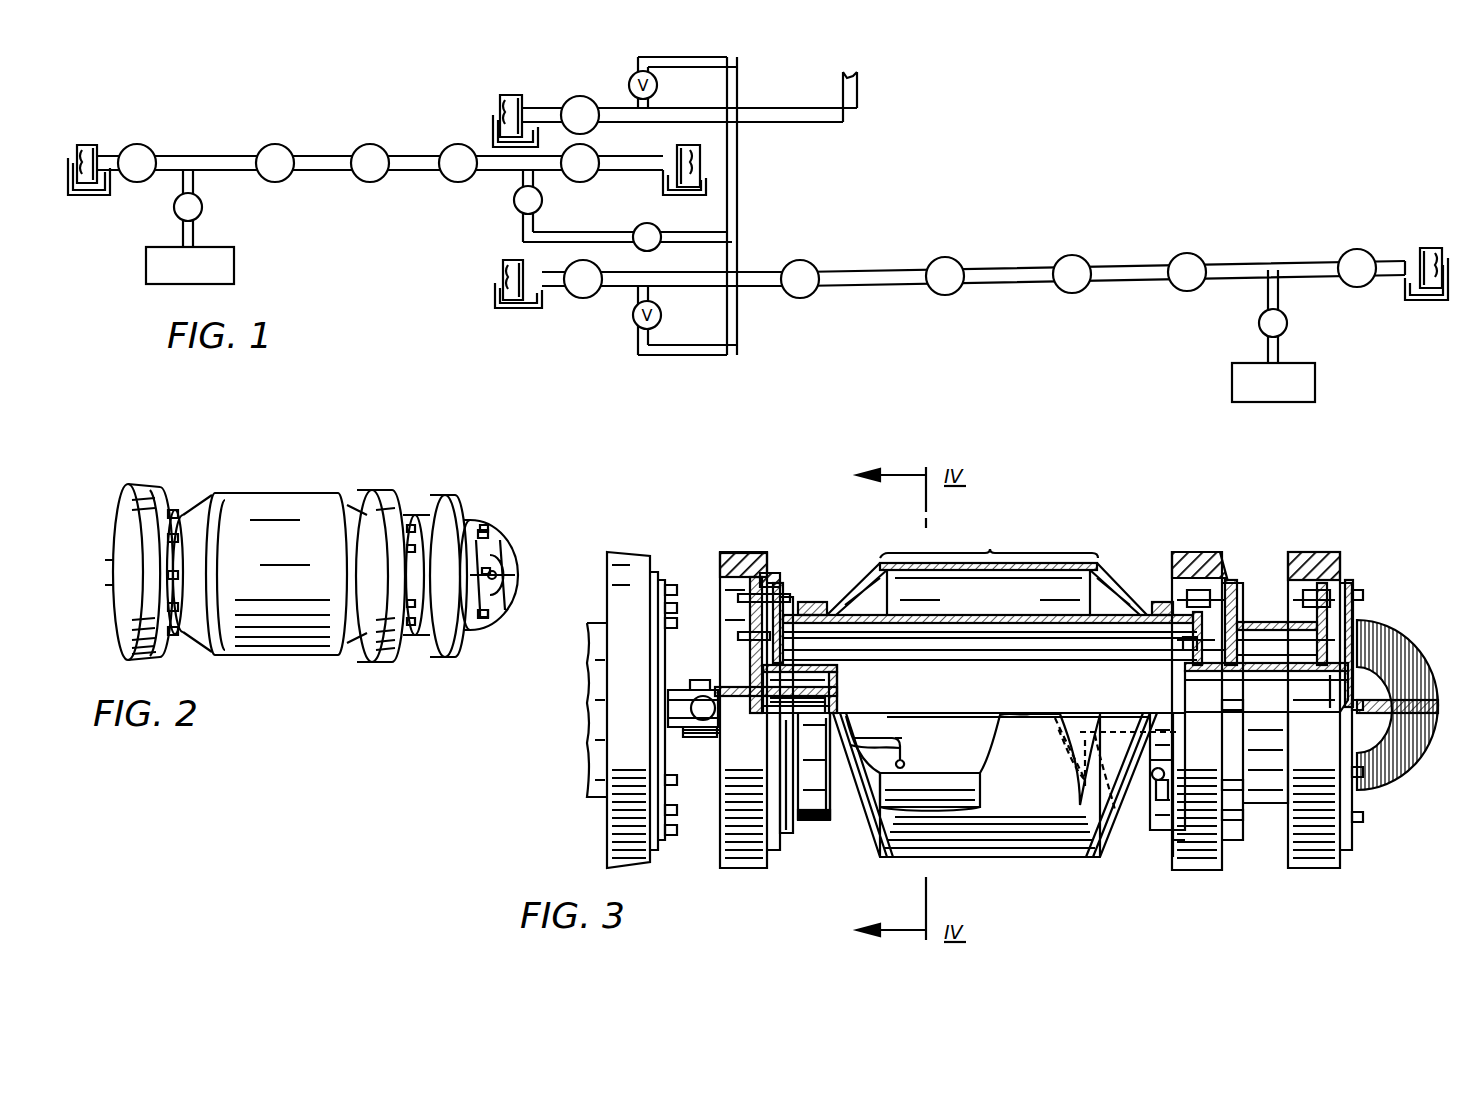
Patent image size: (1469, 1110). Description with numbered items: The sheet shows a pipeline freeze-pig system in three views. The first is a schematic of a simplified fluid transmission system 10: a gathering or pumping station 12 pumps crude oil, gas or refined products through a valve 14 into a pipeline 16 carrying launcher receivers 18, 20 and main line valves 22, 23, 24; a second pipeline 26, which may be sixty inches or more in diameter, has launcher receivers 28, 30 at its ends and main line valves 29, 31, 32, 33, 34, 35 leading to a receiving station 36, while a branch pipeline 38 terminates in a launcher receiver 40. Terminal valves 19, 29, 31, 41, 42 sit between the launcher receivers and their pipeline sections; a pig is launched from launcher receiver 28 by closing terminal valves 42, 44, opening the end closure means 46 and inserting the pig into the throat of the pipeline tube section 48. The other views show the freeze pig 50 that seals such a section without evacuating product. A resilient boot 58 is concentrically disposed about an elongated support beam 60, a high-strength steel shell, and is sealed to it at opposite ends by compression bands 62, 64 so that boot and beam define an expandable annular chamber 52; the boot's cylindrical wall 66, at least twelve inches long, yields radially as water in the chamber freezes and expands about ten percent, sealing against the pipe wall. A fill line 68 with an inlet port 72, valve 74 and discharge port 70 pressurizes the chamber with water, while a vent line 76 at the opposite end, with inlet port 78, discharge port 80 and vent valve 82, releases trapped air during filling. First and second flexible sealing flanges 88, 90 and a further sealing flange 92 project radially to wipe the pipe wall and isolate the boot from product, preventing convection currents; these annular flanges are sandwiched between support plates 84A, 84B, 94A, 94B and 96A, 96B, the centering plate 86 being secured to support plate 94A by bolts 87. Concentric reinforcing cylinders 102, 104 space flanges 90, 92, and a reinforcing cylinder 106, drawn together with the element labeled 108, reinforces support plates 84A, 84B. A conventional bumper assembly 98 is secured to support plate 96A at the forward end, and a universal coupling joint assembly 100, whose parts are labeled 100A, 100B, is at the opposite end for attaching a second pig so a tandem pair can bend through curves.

In FIG. 1, the fluid transmission system 10 is at (414, 98).
In FIG. 1, the pumping station 12 is at (234, 265).
In FIG. 1, the valve 14 is at (203, 208).
In FIG. 1, the pipeline 16 is at (318, 172).
In FIG. 1, the launcher receiver 18 is at (100, 138).
In FIG. 1, the terminal valve 19 is at (137, 183).
In FIG. 1, the launcher receiver 20 is at (672, 147).
In FIG. 1, the main line valve 22 is at (282, 145).
In FIG. 1, the main line valve 23 is at (370, 183).
In FIG. 1, the main line valve 24 is at (455, 183).
In FIG. 1, the second pipeline 26 is at (994, 285).
In FIG. 1, the launcher receiver 28 is at (493, 288).
In FIG. 1, the terminal valve 29 is at (583, 299).
In FIG. 1, the launcher receiver 30 is at (1430, 243).
In FIG. 1, the terminal valve 31 is at (810, 261).
In FIG. 1, the main line valve 32 is at (950, 258).
In FIG. 1, the main line valve 33 is at (1078, 256).
In FIG. 1, the main line valve 34 is at (1190, 254).
In FIG. 1, the main line valve 35 is at (1360, 250).
In FIG. 1, the receiving station 36 is at (1315, 375).
In FIG. 1, the branch pipeline 38 is at (843, 74).
In FIG. 1, the launcher receiver 40 is at (518, 92).
In FIG. 1, the terminal valve 41 is at (580, 96).
In FIG. 1, the terminal valve 42 is at (580, 183).
In FIG. 1, the terminal valve 44 is at (515, 202).
In FIG. 1, the end closure means 46 is at (706, 186).
In FIG. 1, the pipeline tube section 48 is at (620, 172).
In FIG. 2, the freeze pig 50 is at (298, 476).
In FIG. 3, the freeze pig 50 is at (572, 808).
In FIG. 3, the expandable chamber 52 is at (992, 598).
In FIG. 2, the resilient boot 58 is at (252, 502).
In FIG. 3, the resilient boot 58 is at (850, 578).
In FIG. 3, the support beam 60 is at (990, 623).
In FIG. 3, the compression band 62 is at (1162, 600).
In FIG. 2, the compression band 64 is at (185, 558).
In FIG. 3, the compression band 64 is at (812, 600).
In FIG. 3, the cylindrical wall 66 is at (989, 538).
In FIG. 3, the fill line 68 is at (905, 728).
In FIG. 3, the discharge port 70 is at (905, 740).
In FIG. 3, the inlet port 72 is at (808, 815).
In FIG. 3, the valve 74 is at (832, 818).
In FIG. 3, the vent line 76 is at (1135, 725).
In FIG. 3, the inlet port 78 is at (1060, 720).
In FIG. 3, the discharge port 80 is at (1175, 838).
In FIG. 3, the vent valve 82 is at (1156, 780).
In FIG. 2, the support plate 84A is at (185, 630).
In FIG. 3, the support plate 84A is at (783, 632).
In FIG. 3, the support plate 84B is at (752, 620).
In FIG. 3, the centering plate 86 is at (1190, 656).
In FIG. 2, the bolts 87 is at (180, 520).
In FIG. 3, the bolts 87 is at (680, 808).
In FIG. 2, the first flexible sealing flange 88 is at (145, 648).
In FIG. 3, the first flexible sealing flange 88 is at (745, 868).
In FIG. 2, the second flexible sealing flange 90 is at (375, 495).
In FIG. 3, the second flexible sealing flange 90 is at (1198, 870).
In FIG. 2, the sealing flange 92 is at (415, 515).
In FIG. 3, the sealing flange 92 is at (607, 845).
In FIG. 3, the support plate 94A is at (1200, 672).
In FIG. 3, the support plate 94B is at (1266, 691).
In FIG. 2, the support plate 96A is at (485, 628).
In FIG. 3, the support plate 96A is at (1353, 612).
In FIG. 3, the support plate 96B is at (1318, 648).
In FIG. 2, the bumper assembly 98 is at (518, 548).
In FIG. 3, the bumper assembly 98 is at (1418, 665).
In FIG. 2, the universal coupling joint assembly 100 is at (96, 548).
In FIG. 3, the universal coupling joint assembly 100 is at (696, 676).
In FIG. 3, the mounting pin 100A is at (683, 690).
In FIG. 3, the mounting bracket 100B is at (683, 731).
In FIG. 3, the reinforcing cylinder 102 is at (590, 738).
In FIG. 3, the reinforcing cylinder 104 is at (1280, 671).
In FIG. 3, the reinforcing cylinder 106 is at (820, 666).
In FIG. 3, the bearing ring 108 is at (796, 705).